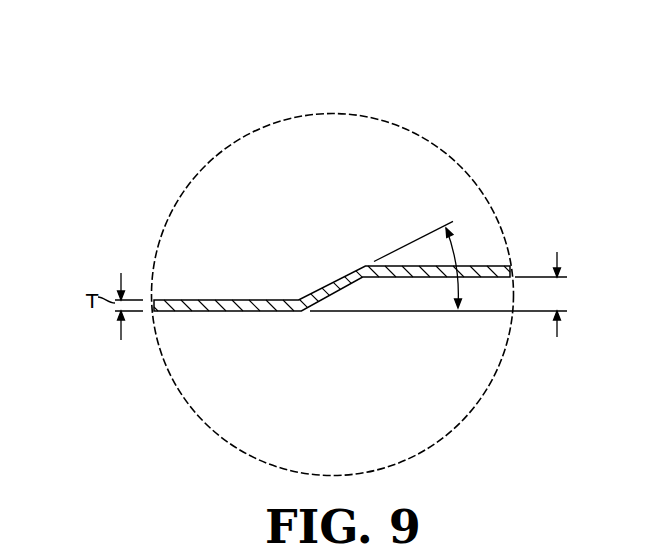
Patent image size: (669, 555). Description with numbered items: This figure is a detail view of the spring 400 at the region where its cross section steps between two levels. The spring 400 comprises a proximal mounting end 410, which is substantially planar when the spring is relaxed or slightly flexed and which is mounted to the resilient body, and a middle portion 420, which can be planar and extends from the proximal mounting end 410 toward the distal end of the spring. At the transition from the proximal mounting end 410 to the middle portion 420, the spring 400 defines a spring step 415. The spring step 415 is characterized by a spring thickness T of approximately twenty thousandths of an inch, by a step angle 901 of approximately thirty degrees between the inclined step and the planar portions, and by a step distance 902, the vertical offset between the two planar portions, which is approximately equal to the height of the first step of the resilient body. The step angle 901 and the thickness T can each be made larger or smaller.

The spring 400 is at (379, 276).
The proximal mounting end 410 is at (210, 313).
The spring step 415 is at (310, 292).
The middle portion 420 is at (474, 264).
The step angle 901 is at (456, 247).
The step distance 902 is at (555, 293).